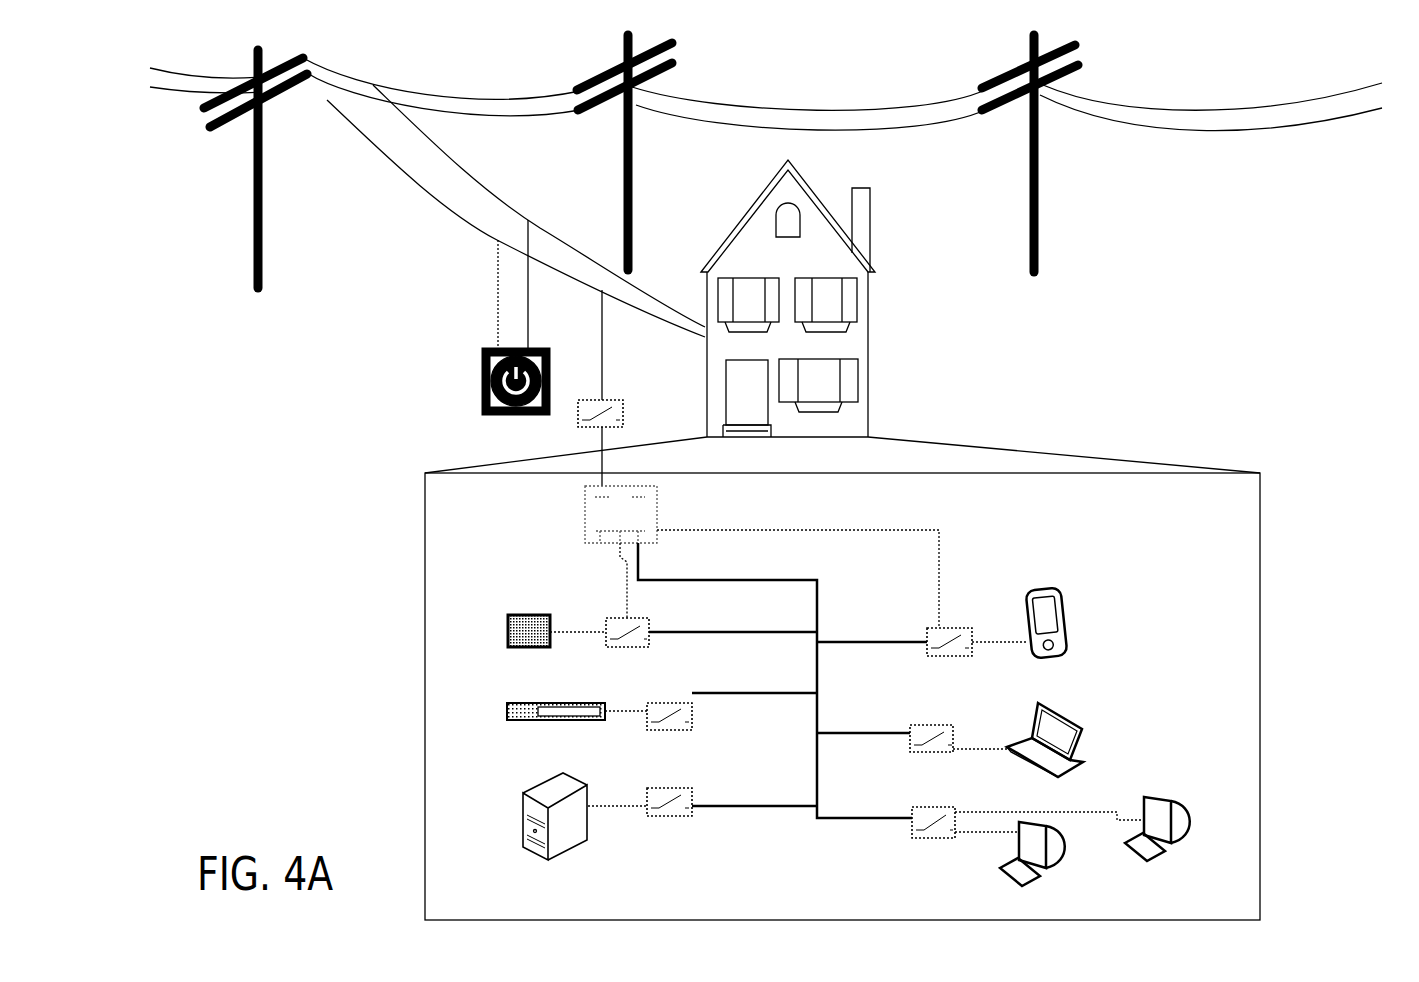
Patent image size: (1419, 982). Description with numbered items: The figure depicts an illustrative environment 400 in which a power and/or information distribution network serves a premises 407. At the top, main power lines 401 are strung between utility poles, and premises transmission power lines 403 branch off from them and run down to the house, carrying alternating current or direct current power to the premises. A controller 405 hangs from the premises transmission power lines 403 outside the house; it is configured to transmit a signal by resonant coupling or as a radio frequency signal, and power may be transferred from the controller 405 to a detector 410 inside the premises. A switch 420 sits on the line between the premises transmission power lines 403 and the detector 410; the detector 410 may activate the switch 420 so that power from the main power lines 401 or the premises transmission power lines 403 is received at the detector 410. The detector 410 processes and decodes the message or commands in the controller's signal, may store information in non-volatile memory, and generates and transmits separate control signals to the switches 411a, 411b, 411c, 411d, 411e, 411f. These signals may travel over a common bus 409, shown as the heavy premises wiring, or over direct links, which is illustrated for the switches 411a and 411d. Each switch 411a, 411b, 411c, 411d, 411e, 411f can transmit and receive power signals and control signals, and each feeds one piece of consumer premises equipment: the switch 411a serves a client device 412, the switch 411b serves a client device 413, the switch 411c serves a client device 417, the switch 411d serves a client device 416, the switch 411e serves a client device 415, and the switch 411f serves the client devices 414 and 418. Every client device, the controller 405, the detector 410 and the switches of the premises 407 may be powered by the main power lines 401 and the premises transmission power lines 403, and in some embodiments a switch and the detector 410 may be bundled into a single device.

The environment 400 is at (828, 26).
The main power lines 401 is at (398, 84).
The premises transmission power lines 403 is at (438, 192).
The controller 405 is at (481, 350).
The premises 407 is at (877, 298).
The common bus 409 is at (694, 690).
The detector 410 is at (741, 557).
The switch 411a is at (605, 626).
The switch 411b is at (671, 700).
The switch 411c is at (670, 786).
The switch 411d is at (949, 626).
The switch 411e is at (930, 722).
The switch 411f is at (909, 833).
The client device 412 is at (557, 648).
The client device 413 is at (577, 728).
The client device 414 is at (1010, 872).
The client device 415 is at (1018, 755).
The client device 416 is at (1019, 641).
The client device 417 is at (585, 837).
The client device 418 is at (1072, 846).
The switch 420 is at (604, 398).